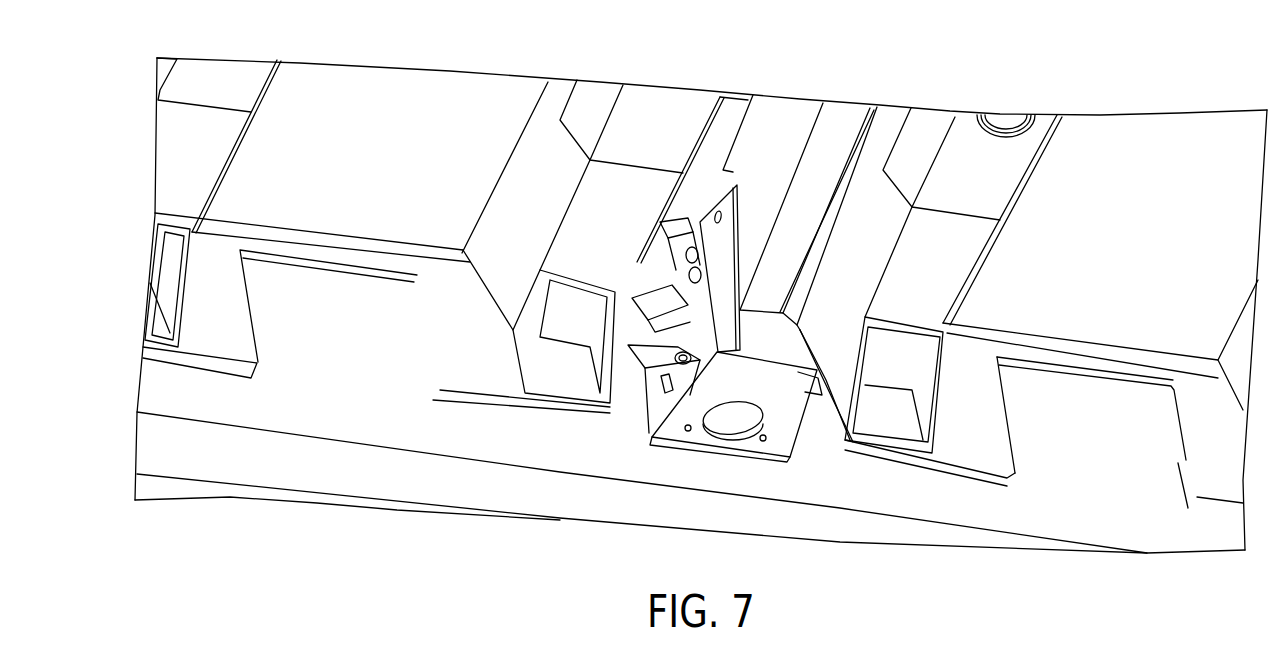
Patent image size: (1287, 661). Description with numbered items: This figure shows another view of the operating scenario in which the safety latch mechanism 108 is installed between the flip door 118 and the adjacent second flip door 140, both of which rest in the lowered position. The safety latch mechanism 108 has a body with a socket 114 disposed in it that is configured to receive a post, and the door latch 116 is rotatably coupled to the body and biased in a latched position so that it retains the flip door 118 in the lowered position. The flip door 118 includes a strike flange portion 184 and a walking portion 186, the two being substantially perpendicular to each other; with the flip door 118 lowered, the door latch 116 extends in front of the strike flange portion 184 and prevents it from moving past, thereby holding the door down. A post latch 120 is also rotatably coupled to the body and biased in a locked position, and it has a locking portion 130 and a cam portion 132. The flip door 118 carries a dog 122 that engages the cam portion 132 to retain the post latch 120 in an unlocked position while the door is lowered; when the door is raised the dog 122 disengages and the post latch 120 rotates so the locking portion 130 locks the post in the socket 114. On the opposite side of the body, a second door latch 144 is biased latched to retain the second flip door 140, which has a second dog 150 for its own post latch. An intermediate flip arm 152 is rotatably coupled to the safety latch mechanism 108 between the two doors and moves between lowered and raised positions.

The safety latch mechanism 108 is at (636, 462).
The socket 114 is at (728, 422).
The door latch 116 is at (657, 355).
The flip door 118 is at (375, 83).
The post latch 120 is at (657, 317).
The dog 122 is at (657, 240).
The locking portion 130 is at (677, 292).
The cam portion 132 is at (692, 230).
The second flip door 140 is at (1103, 127).
The second door latch 144 is at (808, 378).
The second dog 150 is at (813, 270).
The intermediate flip arm 152 is at (783, 127).
The strike flange portion 184 is at (233, 330).
The walking portion 186 is at (284, 112).